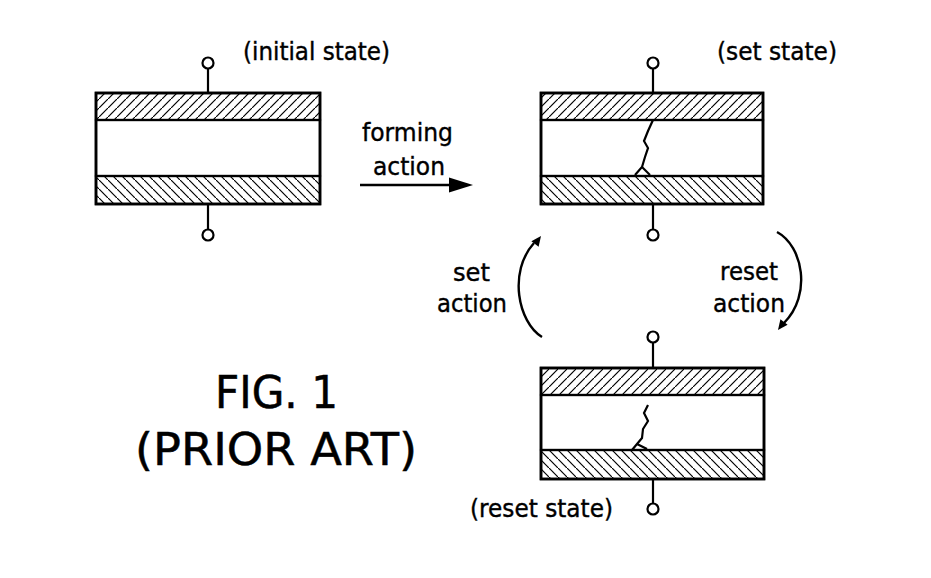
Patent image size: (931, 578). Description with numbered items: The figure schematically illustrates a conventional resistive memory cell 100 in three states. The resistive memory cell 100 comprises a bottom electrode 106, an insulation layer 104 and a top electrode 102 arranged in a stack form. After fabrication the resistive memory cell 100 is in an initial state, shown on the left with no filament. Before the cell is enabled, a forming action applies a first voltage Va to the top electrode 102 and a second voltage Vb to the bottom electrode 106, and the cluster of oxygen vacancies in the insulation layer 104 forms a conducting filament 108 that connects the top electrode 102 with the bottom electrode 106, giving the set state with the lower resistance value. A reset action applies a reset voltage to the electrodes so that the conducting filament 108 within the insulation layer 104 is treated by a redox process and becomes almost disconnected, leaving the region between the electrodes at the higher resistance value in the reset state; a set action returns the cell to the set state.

The resistive memory cell 100 is at (158, 60).
The top electrode 102 is at (96, 107).
The insulation layer 104 is at (96, 162).
The bottom electrode 106 is at (96, 199).
The conducting filament 108 is at (645, 152).